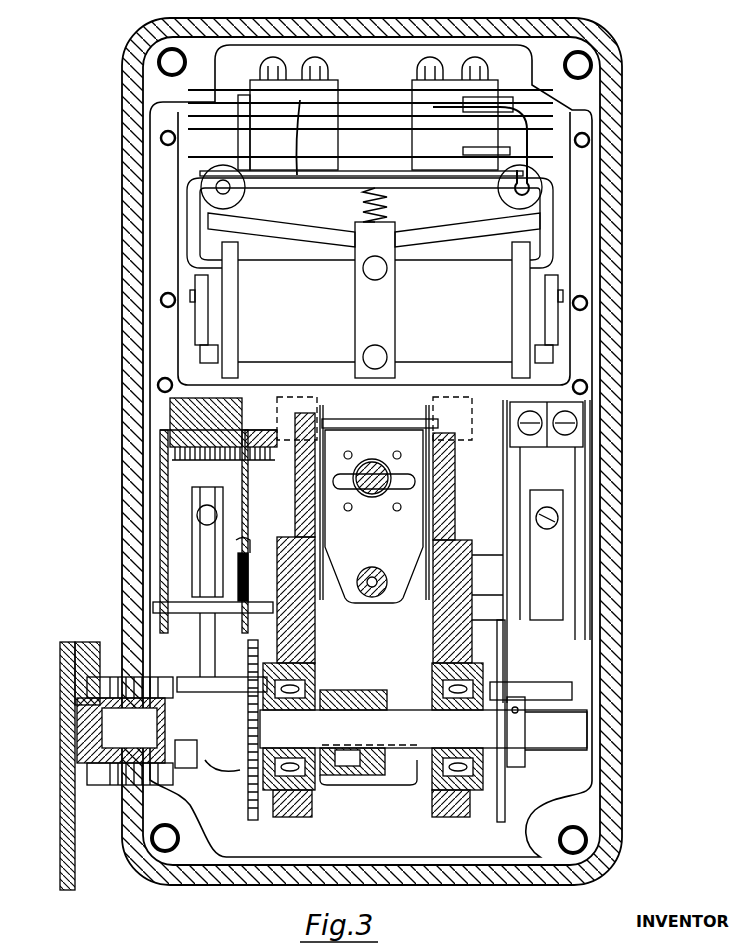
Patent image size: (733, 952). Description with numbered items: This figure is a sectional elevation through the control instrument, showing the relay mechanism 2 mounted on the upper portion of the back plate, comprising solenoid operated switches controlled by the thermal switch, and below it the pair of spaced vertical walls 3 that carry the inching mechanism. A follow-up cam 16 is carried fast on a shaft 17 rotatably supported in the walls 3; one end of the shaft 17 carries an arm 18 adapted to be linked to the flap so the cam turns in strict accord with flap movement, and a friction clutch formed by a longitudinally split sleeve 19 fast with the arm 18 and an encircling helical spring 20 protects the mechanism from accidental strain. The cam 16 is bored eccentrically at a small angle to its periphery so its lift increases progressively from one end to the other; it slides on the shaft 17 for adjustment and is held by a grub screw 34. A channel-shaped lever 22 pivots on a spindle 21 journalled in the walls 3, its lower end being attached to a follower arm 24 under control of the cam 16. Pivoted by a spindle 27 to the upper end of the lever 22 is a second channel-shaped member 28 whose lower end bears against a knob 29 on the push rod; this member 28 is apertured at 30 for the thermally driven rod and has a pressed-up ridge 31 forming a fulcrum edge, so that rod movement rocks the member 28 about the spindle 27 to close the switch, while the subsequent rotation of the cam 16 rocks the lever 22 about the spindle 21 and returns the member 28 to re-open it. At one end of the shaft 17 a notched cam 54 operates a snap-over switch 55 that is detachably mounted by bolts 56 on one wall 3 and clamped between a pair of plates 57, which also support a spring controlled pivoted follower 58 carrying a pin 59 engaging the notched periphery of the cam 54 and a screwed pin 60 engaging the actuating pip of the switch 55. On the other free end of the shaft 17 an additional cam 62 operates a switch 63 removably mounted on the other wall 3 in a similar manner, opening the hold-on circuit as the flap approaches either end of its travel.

The relay mechanism 2 is at (232, 270).
The vertical walls 3 is at (313, 652).
The follow-up cam 16 is at (373, 770).
The shaft 17 is at (563, 738).
The arm 18 is at (65, 837).
The longitudinally split sleeve 19 is at (187, 705).
The helical spring 20 is at (207, 767).
The spindle 21 is at (303, 518).
The channel-shaped lever 22 is at (320, 567).
The follower arm 24 is at (403, 773).
The spindle 27 is at (440, 422).
The second channel-shaped member 28 is at (345, 442).
The knob 29 is at (372, 598).
The aperture 30 is at (372, 457).
The pressed-up ridge 31 is at (413, 488).
The grub screw 34 is at (350, 768).
The notched cam 54 is at (253, 820).
The snap-over switch 55 is at (177, 555).
The bolts 56 is at (197, 446).
The plates 57 is at (240, 625).
The pivoted follower 58 is at (187, 655).
The pin 59 is at (163, 783).
The screwed pin 60 is at (207, 515).
The additional cam 62 is at (500, 822).
The switch 63 is at (573, 498).